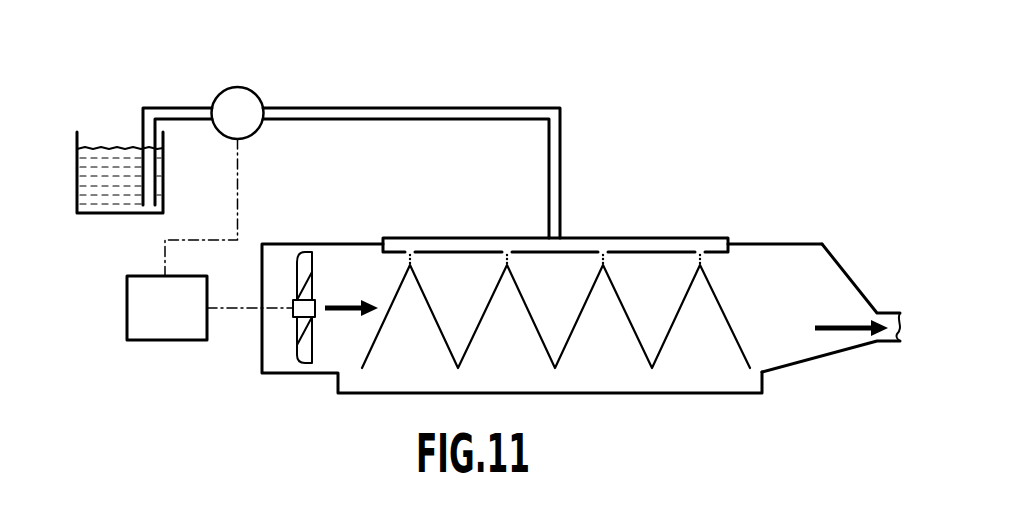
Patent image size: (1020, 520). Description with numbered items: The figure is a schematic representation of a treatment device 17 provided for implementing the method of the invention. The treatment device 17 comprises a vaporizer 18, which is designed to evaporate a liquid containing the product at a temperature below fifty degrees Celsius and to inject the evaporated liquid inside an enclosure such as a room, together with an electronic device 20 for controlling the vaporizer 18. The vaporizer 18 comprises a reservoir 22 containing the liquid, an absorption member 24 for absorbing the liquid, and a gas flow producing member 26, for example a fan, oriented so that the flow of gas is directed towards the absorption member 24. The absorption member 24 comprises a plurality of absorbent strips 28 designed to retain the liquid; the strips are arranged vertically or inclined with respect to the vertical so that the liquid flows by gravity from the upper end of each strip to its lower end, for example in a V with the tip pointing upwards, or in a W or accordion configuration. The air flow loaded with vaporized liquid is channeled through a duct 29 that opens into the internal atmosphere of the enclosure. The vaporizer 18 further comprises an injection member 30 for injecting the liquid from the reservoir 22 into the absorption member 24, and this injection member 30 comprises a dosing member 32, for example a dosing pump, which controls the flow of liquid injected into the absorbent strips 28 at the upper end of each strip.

The treatment device 17 is at (526, 94).
The vaporizer 18 is at (624, 134).
The electronic device 20 is at (210, 239).
The reservoir 22 is at (77, 172).
The absorption member 24 is at (740, 309).
The gas flow producing member 26 is at (312, 264).
The absorbent strips 28 is at (490, 300).
The duct 29 is at (884, 312).
The injection member 30 is at (314, 82).
The dosing member 32 is at (219, 91).